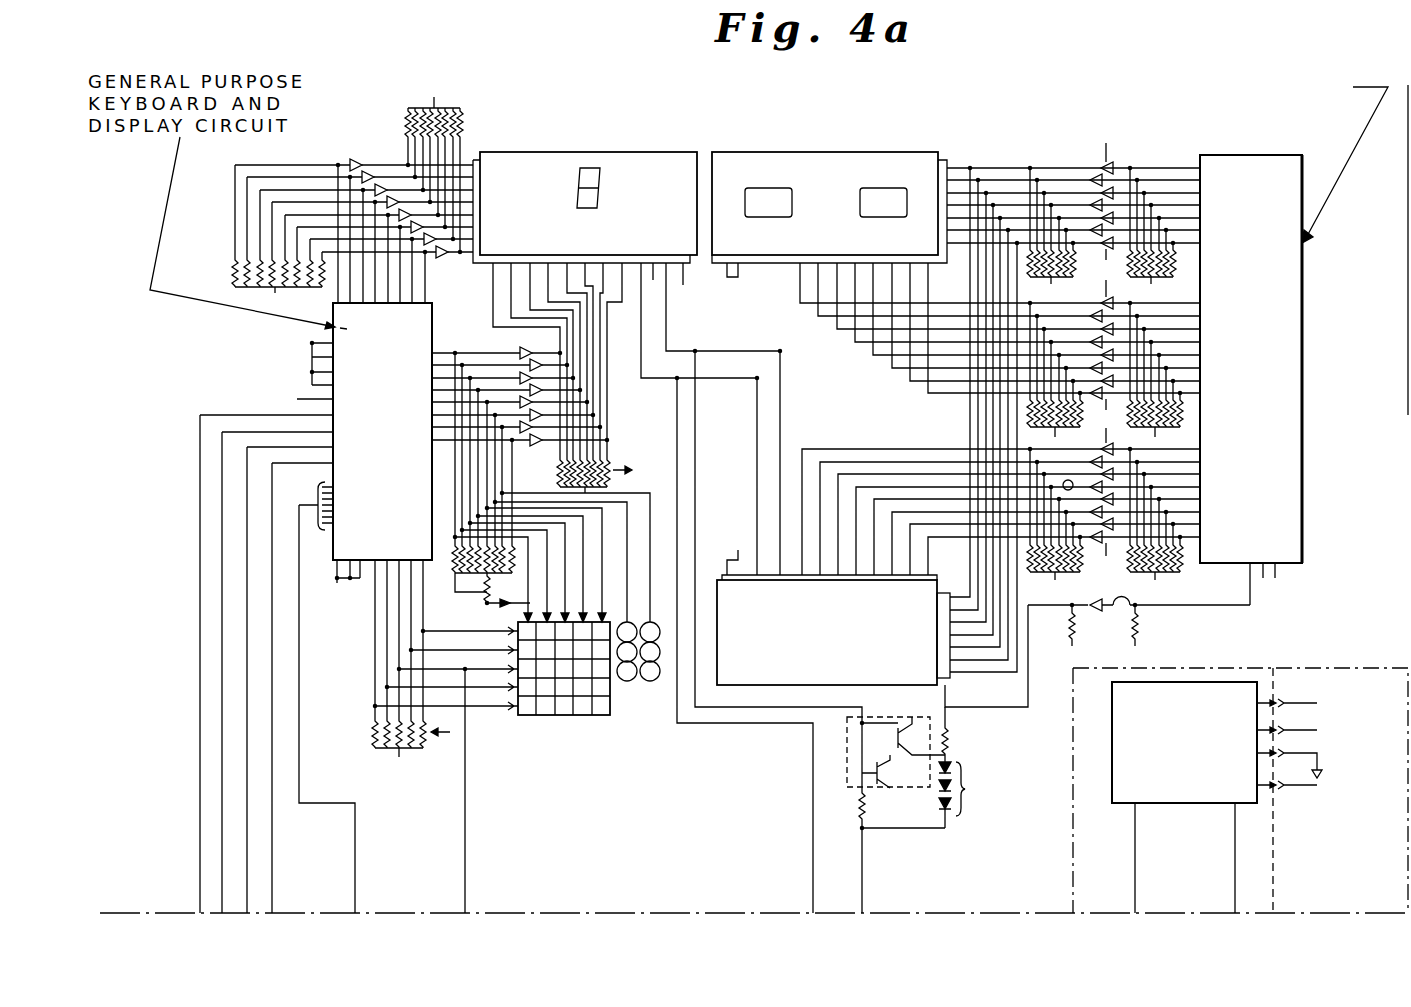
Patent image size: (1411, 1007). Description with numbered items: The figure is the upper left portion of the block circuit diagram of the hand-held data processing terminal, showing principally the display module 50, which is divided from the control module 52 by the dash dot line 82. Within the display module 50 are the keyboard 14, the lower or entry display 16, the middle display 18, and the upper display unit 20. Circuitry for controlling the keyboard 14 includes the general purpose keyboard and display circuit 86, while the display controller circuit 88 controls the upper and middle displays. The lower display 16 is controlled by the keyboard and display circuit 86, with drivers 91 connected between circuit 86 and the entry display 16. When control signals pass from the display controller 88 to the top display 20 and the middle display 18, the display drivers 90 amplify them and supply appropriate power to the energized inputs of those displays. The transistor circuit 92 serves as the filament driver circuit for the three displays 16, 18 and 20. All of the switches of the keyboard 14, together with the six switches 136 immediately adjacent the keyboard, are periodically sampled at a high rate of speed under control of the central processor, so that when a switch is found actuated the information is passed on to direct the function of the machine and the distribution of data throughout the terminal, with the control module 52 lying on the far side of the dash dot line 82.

The keyboard 14 is at (536, 715).
The lower display 16 is at (518, 163).
The middle display 18 is at (773, 675).
The upper display unit 20 is at (910, 163).
The display module 50 is at (712, 426).
The control module 52 is at (1245, 799).
The dash dot line 82 is at (1372, 668).
The general purpose keyboard and display circuit 86 is at (364, 443).
The display controller circuit 88 is at (1277, 328).
The display drivers 90 is at (1117, 143).
The drivers 91 is at (442, 272).
The transistor circuit 92 is at (898, 790).
The switches 136 is at (641, 692).